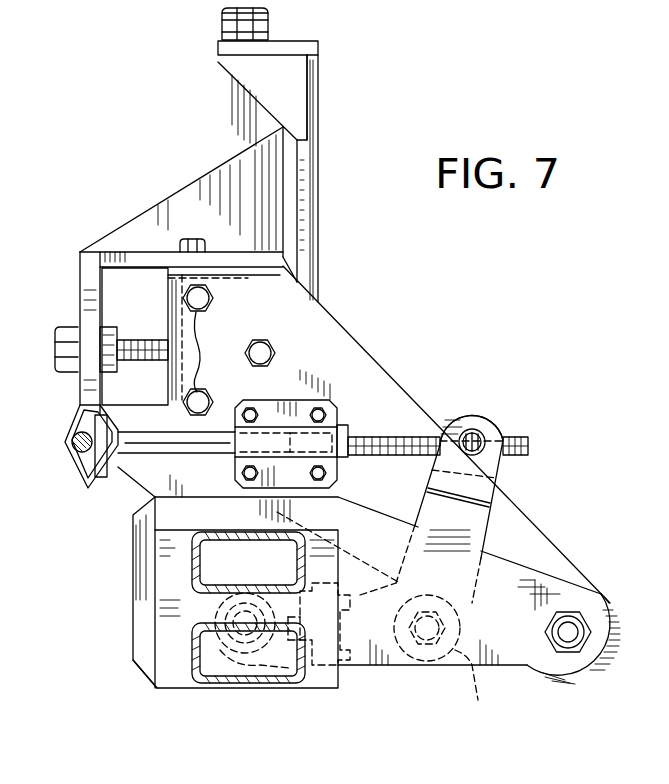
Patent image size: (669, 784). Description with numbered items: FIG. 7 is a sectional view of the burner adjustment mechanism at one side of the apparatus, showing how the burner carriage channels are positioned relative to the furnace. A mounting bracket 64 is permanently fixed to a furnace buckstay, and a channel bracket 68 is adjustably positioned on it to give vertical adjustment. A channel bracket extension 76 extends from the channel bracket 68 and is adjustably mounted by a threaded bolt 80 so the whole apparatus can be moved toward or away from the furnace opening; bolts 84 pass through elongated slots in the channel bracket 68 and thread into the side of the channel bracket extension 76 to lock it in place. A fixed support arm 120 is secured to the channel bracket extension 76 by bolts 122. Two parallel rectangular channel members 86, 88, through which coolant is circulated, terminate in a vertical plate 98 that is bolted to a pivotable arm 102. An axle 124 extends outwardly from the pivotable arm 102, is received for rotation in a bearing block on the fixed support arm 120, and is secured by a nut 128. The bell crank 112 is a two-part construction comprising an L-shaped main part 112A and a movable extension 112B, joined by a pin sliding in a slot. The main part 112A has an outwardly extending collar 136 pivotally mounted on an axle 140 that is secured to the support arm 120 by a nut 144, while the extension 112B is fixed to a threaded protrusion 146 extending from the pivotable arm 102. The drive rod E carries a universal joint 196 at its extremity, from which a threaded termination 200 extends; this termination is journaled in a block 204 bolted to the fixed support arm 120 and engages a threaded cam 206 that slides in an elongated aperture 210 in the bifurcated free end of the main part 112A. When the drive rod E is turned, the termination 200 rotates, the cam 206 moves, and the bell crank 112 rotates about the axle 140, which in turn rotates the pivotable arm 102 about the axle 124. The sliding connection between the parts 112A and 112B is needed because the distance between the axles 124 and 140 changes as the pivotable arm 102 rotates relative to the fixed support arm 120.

The mounting bracket 64 is at (323, 103).
The channel bracket 68 is at (85, 250).
The bolt 84 is at (197, 239).
The threaded bolt 80 is at (62, 352).
The channel bracket extension 76 is at (240, 278).
The fixed support arm 120 is at (322, 333).
The bolt 122 is at (247, 353).
The block 204 is at (322, 440).
The threaded termination 200 is at (522, 438).
The threaded cam 206 is at (452, 396).
The elongated aperture 210 is at (492, 470).
The bell crank 112 is at (498, 513).
The L-shaped main part 112A is at (480, 545).
The axle 124 is at (580, 622).
The nut 128 is at (572, 640).
The collar 136 is at (474, 600).
The axle 140 is at (440, 662).
The nut 144 is at (447, 647).
The channel member 86 is at (200, 568).
The channel member 88 is at (232, 678).
The pivotable arm 102 is at (152, 628).
The vertical plate 98 is at (157, 655).
The threaded protrusion 146 is at (210, 692).
The movable extension 112B is at (290, 694).
The universal joint 196 is at (82, 488).
The drive rod E is at (70, 440).